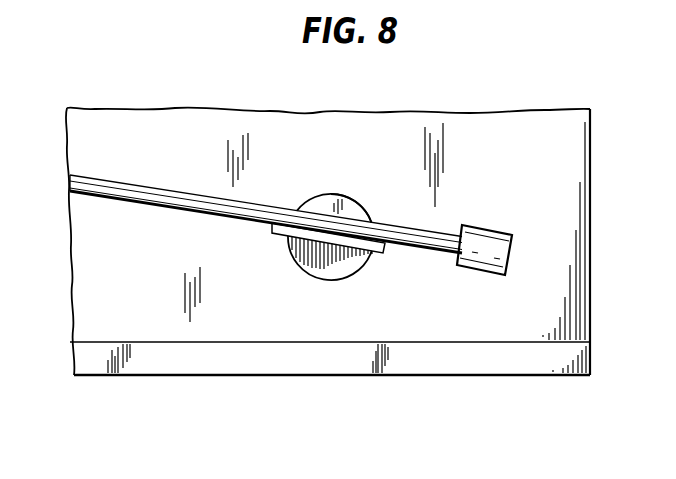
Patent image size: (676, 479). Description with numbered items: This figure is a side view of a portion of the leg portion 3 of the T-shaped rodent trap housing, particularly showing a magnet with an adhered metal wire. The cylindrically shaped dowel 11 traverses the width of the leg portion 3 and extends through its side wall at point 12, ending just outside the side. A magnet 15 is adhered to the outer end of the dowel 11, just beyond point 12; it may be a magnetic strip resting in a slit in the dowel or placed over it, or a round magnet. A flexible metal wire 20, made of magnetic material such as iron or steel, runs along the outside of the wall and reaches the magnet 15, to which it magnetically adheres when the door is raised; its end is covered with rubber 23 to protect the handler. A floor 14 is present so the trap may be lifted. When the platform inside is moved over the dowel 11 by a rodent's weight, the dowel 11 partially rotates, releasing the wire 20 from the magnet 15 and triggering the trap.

The leg portion 3 is at (93, 263).
The dowel 11 is at (327, 200).
The point 12 is at (365, 200).
The floor 14 is at (204, 365).
The magnet 15 is at (273, 233).
The flexible metal wire 20 is at (142, 186).
The rubber 23 is at (486, 274).